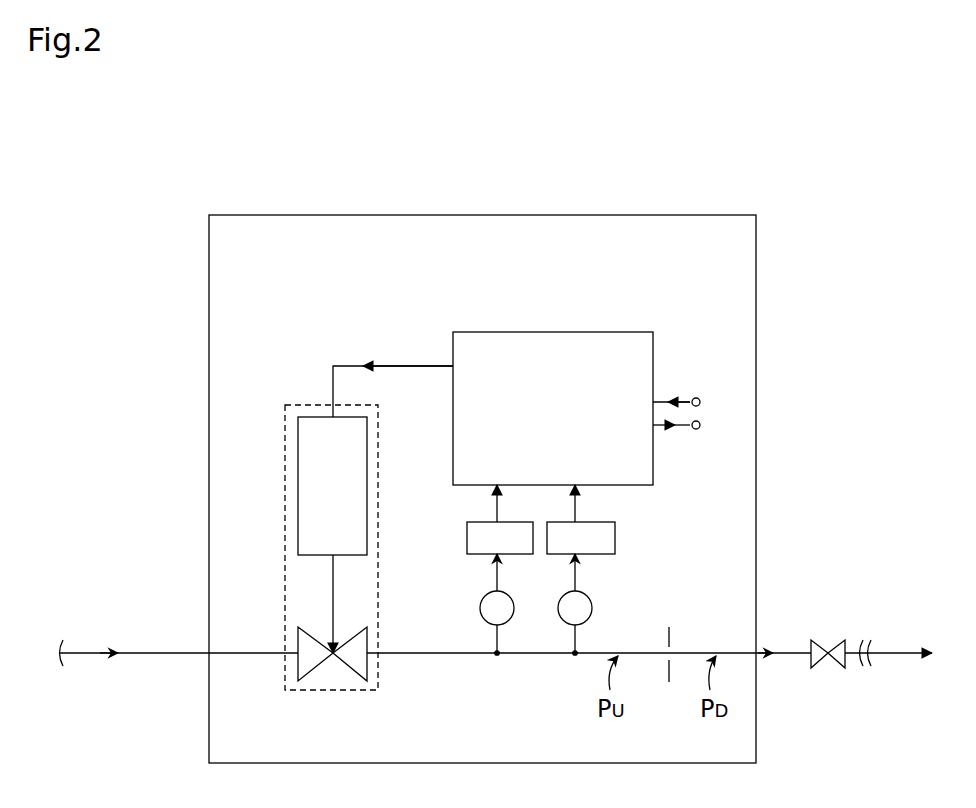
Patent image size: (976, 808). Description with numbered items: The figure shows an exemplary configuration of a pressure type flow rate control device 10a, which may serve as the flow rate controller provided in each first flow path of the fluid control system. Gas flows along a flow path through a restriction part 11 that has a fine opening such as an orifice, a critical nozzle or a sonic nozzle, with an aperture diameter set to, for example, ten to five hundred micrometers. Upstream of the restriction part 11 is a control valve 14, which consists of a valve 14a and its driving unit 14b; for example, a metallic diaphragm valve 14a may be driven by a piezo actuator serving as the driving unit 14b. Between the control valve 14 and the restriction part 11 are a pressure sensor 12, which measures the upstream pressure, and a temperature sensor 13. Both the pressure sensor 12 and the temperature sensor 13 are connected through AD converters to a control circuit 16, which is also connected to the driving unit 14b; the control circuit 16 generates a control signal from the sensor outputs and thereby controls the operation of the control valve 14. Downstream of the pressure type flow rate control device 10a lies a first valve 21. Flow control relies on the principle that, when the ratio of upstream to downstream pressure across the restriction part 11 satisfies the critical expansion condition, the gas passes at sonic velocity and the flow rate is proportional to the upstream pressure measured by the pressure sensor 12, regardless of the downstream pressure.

The pressure type flow rate control device 10a is at (660, 215).
The restriction part 11 is at (668, 660).
The pressure sensor 12 is at (561, 598).
The temperature sensor 13 is at (483, 598).
The control valve 14 is at (283, 550).
The valve 14a is at (340, 660).
The driving unit 14b is at (298, 487).
The control circuit 16 is at (542, 332).
The first valve 21 is at (828, 645).